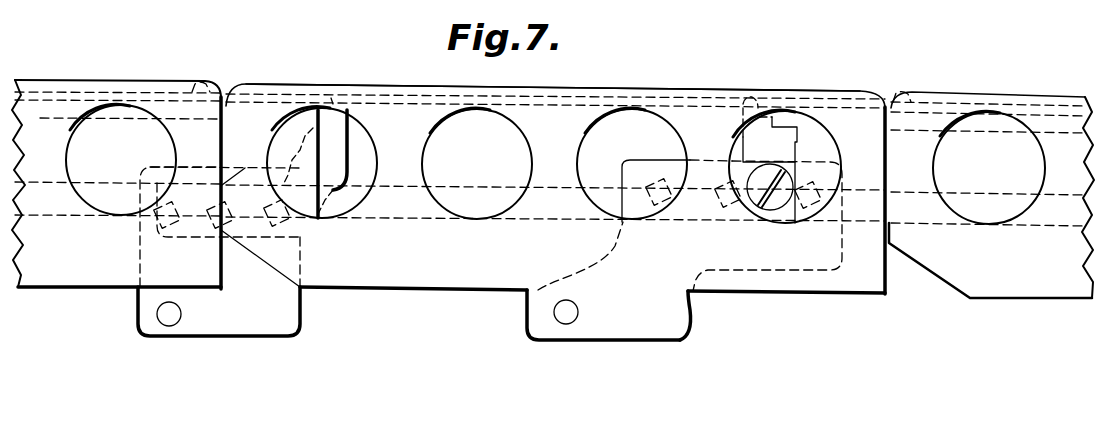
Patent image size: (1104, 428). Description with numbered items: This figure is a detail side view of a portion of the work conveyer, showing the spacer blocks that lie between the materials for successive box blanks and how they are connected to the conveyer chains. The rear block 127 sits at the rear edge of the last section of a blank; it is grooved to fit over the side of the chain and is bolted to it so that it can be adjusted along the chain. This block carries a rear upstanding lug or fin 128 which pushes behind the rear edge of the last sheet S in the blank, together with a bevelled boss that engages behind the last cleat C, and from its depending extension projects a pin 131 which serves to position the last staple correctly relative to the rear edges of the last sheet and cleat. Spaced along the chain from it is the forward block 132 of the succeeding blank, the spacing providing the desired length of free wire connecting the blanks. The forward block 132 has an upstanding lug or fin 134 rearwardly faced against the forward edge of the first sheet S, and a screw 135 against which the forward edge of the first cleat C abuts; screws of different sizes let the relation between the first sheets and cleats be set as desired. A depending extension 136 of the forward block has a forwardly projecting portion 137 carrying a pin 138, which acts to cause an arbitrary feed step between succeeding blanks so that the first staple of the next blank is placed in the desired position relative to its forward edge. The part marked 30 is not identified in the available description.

The cleat C is at (112, 140).
The sheet S is at (248, 110).
The plate body 30 is at (566, 115).
The rear upstanding lug or fin 128 is at (331, 98).
The rear block 127 is at (160, 262).
The pin 131 is at (167, 315).
The forward block 132 is at (713, 212).
The upstanding lug or fin 134 is at (757, 100).
The screw 135 is at (768, 172).
The depending extension 136 is at (686, 336).
The forwardly projecting portion 137 is at (533, 316).
The pin 138 is at (563, 314).